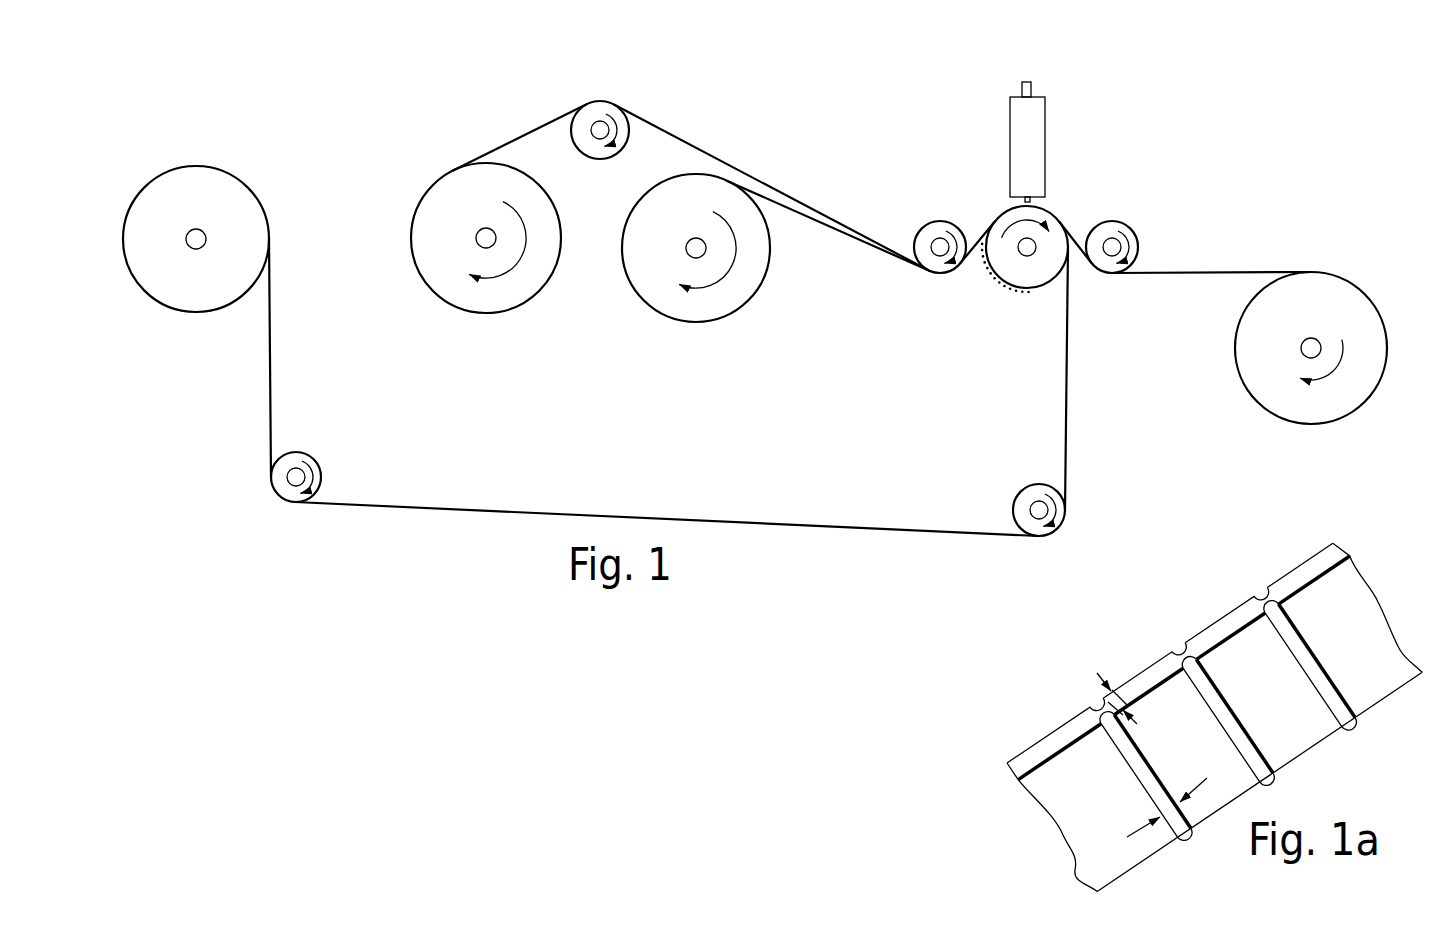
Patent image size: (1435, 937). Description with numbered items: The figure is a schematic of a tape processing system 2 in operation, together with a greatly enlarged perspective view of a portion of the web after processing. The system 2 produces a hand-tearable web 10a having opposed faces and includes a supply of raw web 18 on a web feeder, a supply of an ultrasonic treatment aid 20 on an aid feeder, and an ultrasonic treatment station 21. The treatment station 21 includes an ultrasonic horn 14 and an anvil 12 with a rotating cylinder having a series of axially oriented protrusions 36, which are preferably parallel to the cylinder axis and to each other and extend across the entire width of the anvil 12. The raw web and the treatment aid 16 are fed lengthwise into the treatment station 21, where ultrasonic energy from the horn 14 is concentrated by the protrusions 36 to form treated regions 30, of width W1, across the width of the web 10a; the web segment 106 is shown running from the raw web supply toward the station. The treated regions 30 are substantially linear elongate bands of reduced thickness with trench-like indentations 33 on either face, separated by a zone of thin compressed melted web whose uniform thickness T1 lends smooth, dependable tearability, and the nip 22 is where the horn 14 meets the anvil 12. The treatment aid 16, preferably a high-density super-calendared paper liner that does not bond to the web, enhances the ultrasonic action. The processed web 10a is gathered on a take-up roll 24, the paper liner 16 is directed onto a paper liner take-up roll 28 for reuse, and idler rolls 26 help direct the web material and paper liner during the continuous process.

In FIG. 1, the system 2 is at (1273, 110).
In FIG. 1, the ultrasonic treatment station 21 is at (1052, 58).
In FIG. 1, the paper liner take-up roll 28 is at (168, 302).
In FIG. 1, the supply of raw web 18 is at (448, 300).
In FIG. 1, the supply of ultrasonic treatment aid 20 is at (670, 314).
In FIG. 1, the take-up roll 24 is at (1378, 308).
In FIG. 1, the idler rolls 26 is at (612, 156).
In FIG. 1, the web segment 106 is at (535, 129).
In FIG. 1, the treatment aid 16 is at (845, 234).
In FIG. 1, the hand-tearable web 10a is at (1198, 271).
In FIG. 1A, the hand-tearable web 10a is at (1213, 769).
In FIG. 1, the ultrasonic horn 14 is at (1046, 134).
In FIG. 1, the anvil 12 is at (1035, 288).
In FIG. 1, the coating nip 22 is at (1002, 204).
In FIG. 1, the axially oriented protrusions 36 is at (990, 268).
In FIG. 1A, the treated regions 30 is at (1186, 662).
In FIG. 1A, the trench-like indentations 33 is at (1262, 744).
In FIG. 1A, the thickness of the zone T1 is at (1100, 679).
In FIG. 1A, the width of treated region W1 is at (1127, 837).